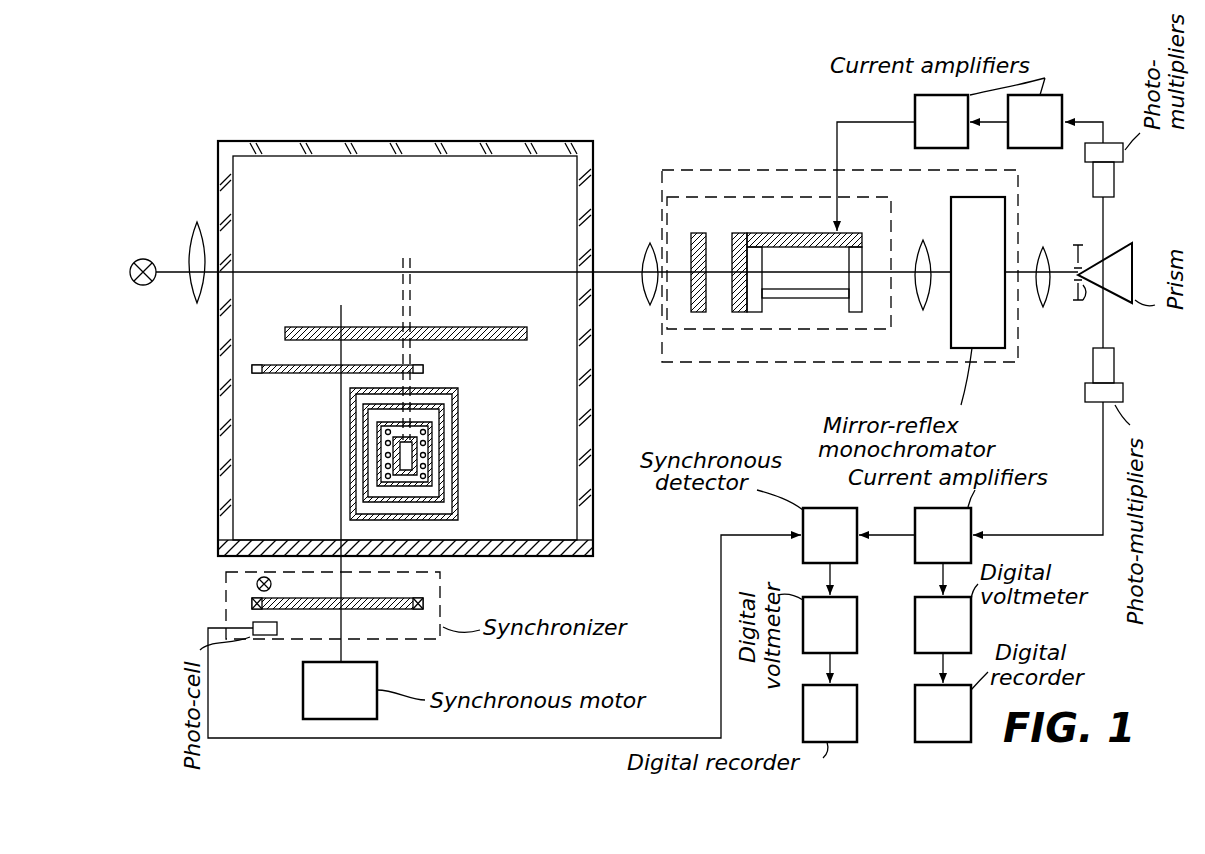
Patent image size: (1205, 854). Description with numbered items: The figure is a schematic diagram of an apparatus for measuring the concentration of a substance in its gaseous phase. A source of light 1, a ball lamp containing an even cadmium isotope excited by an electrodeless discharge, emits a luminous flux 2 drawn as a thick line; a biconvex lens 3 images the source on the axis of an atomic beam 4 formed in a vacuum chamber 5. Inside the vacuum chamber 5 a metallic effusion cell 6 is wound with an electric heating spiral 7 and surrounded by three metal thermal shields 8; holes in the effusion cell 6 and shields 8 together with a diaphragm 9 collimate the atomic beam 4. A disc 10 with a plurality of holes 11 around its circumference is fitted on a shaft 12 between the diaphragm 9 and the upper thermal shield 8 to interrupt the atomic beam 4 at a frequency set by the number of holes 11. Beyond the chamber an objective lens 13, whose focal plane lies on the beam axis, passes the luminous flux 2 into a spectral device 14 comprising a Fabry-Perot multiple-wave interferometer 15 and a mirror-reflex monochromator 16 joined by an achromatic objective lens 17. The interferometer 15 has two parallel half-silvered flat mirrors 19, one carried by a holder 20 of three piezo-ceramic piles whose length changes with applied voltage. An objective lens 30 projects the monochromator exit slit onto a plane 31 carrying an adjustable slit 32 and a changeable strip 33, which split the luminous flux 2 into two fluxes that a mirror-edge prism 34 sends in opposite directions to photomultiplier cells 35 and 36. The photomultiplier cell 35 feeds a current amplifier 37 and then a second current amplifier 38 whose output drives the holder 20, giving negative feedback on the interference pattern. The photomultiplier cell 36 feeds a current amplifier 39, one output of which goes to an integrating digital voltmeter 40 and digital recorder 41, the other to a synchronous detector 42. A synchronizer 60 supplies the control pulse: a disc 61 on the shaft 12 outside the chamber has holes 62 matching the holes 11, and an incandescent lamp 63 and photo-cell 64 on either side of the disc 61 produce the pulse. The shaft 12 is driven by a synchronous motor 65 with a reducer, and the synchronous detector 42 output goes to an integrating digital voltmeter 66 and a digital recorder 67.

The source of light 1 is at (146, 233).
The luminous flux 2 is at (170, 278).
The biconvex lens 3 is at (202, 228).
The atomic beam 4 is at (410, 260).
The vacuum chamber 5 is at (267, 127).
The effusion cell 6 is at (422, 447).
The electric heating spiral 7 is at (420, 454).
The thermal shields 8 is at (433, 481).
The diaphragm 9 is at (495, 327).
The disc 10 is at (254, 365).
The holes 11 is at (272, 376).
The shaft 12 is at (340, 468).
The objective lens 13 is at (645, 257).
The spectral device 14 is at (806, 366).
The Fabry-Perot multiple-wave interferometer 15 is at (712, 334).
The mirror-reflex monochromator 16 is at (988, 348).
The achromatic objective lens 17 is at (926, 247).
The half-silvered flat mirrors 19 is at (734, 247).
The holder 20 is at (790, 240).
The objective lens 30 is at (1042, 252).
The plane 31 is at (1078, 244).
The slit 32 is at (1078, 305).
The changeable strip 33 is at (1077, 279).
The mirror-edge prism 34 is at (1123, 262).
The photomultiplier cell 35 is at (1113, 175).
The photomultiplier cell 36 is at (1118, 394).
The current amplifier 37 is at (1016, 121).
The second current amplifier 38 is at (941, 121).
The current amplifier 39 is at (915, 535).
The integrating digital voltmeter 40 is at (943, 608).
The digital recorder 41 is at (943, 697).
The synchronous detector 42 is at (532, 623).
The synchronizer 60 is at (447, 604).
The disc 61 is at (252, 603).
The holes 62 is at (258, 609).
The incandescent lamp 63 is at (257, 580).
The photo-cell 64 is at (265, 637).
The synchronous motor 65 is at (340, 690).
The integrating digital voltmeter 66 is at (830, 608).
The digital recorder 67 is at (830, 697).